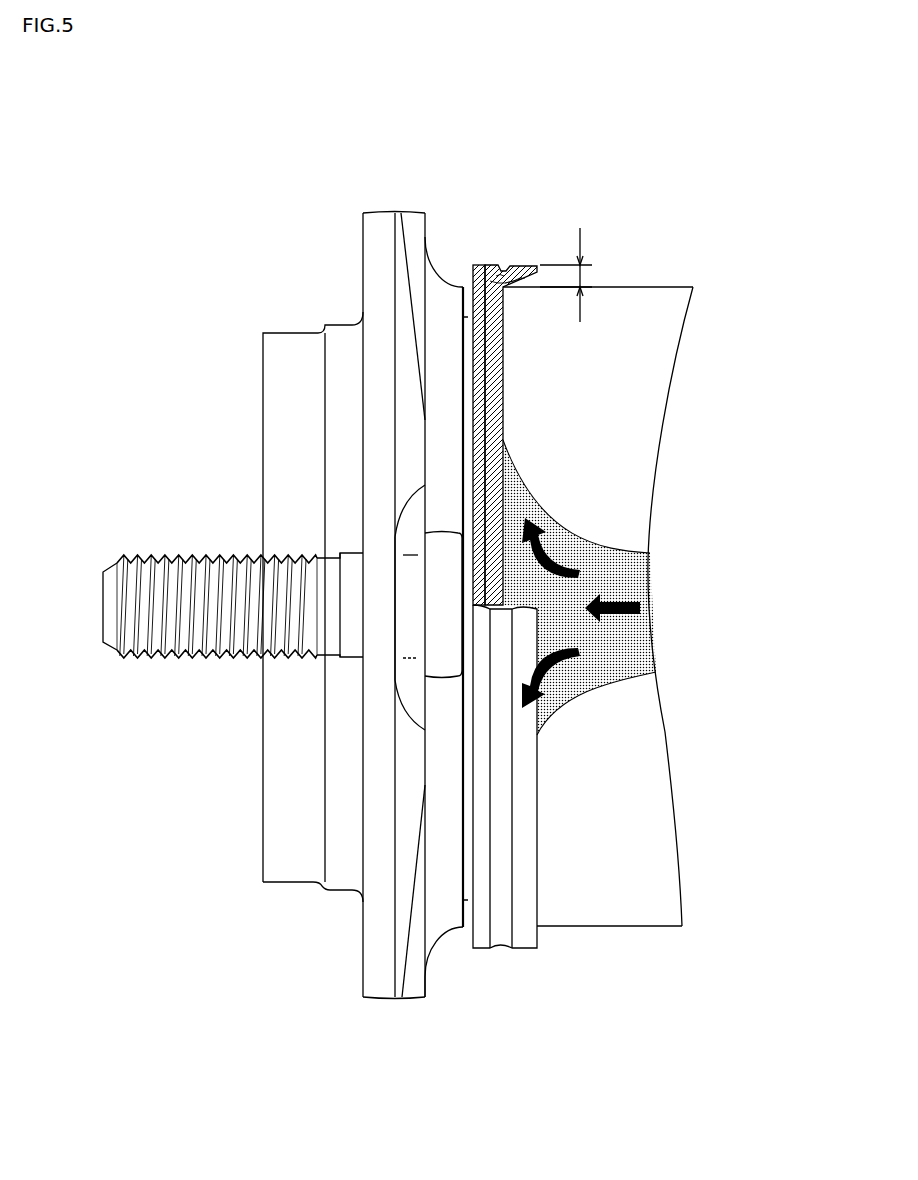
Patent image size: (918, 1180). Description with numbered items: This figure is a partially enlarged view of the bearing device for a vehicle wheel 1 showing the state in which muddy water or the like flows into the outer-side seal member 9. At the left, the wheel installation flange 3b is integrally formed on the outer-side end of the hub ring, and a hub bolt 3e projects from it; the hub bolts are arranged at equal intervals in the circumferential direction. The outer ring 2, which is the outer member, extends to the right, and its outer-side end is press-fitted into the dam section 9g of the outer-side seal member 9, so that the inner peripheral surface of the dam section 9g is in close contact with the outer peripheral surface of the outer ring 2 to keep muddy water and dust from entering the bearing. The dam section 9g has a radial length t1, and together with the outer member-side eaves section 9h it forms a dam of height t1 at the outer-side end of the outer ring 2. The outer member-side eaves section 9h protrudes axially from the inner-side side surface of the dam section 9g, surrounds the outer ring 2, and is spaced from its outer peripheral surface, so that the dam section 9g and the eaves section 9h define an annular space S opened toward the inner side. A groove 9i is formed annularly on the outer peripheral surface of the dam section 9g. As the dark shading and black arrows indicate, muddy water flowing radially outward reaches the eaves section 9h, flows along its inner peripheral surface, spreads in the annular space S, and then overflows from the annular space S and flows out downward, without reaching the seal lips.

The bearing device for a vehicle wheel 1 is at (173, 142).
The outer ring 2 is at (640, 470).
The wheel installation flange 3b is at (370, 960).
The hub bolt 3e is at (165, 557).
The outer-side seal member 9 is at (515, 955).
The dam section 9g is at (478, 265).
The outer member-side eaves section 9h is at (521, 265).
The groove 9i is at (500, 270).
The annular space S is at (524, 280).
The radial length t1 is at (575, 274).